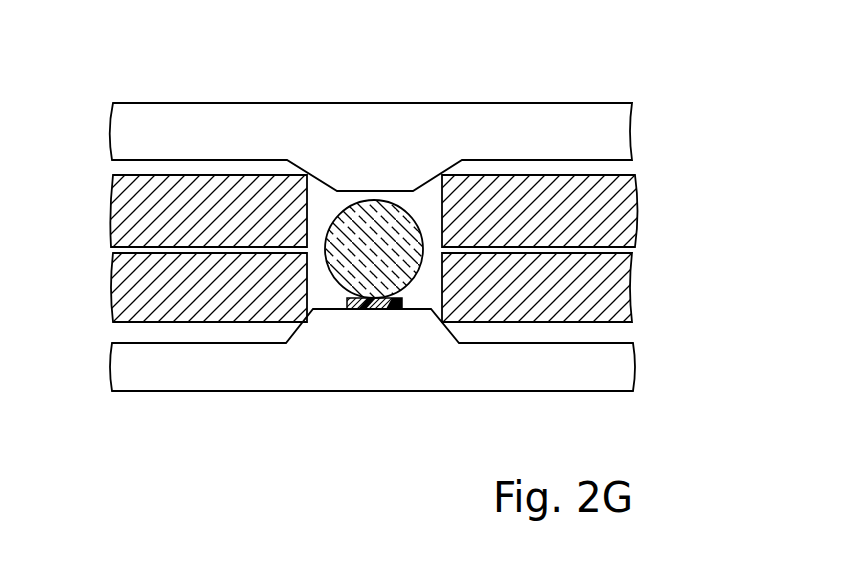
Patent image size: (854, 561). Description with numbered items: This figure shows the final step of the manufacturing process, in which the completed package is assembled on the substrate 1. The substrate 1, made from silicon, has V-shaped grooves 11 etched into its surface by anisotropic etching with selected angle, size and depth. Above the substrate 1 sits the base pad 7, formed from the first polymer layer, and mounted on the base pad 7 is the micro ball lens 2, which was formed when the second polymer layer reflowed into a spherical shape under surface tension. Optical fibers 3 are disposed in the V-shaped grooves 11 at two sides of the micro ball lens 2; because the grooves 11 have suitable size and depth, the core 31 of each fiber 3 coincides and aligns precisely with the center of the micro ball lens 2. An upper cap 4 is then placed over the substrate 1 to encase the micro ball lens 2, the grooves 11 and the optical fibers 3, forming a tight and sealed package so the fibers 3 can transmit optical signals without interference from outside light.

The substrate 1 is at (620, 373).
The V-shaped grooves 11 is at (235, 343).
The micro ball lens 2 is at (358, 225).
The optical fibers 3 is at (642, 208).
The core 31 is at (620, 248).
The upper cap 4 is at (597, 137).
The base pad 7 is at (390, 308).